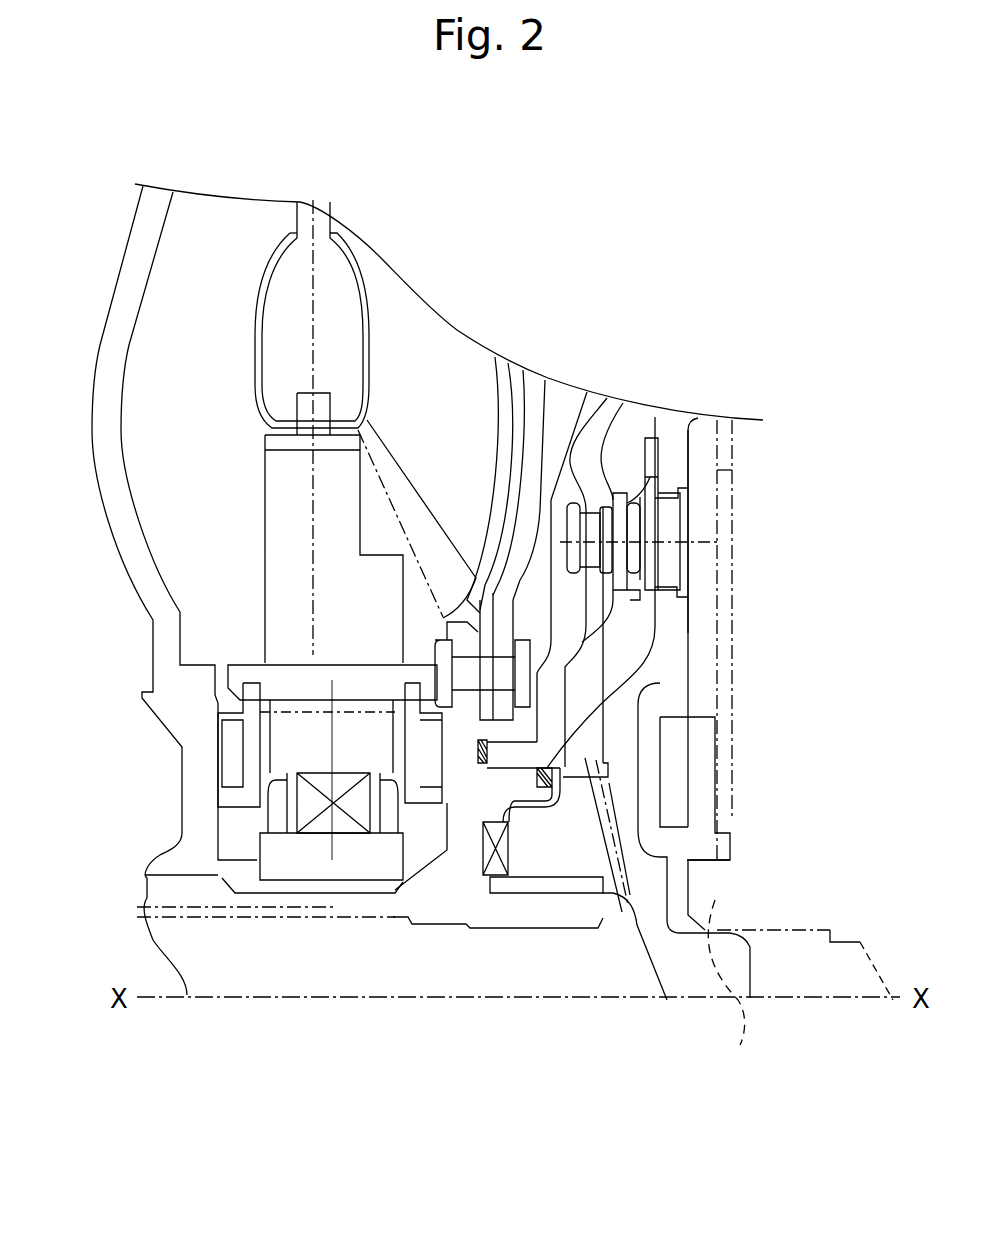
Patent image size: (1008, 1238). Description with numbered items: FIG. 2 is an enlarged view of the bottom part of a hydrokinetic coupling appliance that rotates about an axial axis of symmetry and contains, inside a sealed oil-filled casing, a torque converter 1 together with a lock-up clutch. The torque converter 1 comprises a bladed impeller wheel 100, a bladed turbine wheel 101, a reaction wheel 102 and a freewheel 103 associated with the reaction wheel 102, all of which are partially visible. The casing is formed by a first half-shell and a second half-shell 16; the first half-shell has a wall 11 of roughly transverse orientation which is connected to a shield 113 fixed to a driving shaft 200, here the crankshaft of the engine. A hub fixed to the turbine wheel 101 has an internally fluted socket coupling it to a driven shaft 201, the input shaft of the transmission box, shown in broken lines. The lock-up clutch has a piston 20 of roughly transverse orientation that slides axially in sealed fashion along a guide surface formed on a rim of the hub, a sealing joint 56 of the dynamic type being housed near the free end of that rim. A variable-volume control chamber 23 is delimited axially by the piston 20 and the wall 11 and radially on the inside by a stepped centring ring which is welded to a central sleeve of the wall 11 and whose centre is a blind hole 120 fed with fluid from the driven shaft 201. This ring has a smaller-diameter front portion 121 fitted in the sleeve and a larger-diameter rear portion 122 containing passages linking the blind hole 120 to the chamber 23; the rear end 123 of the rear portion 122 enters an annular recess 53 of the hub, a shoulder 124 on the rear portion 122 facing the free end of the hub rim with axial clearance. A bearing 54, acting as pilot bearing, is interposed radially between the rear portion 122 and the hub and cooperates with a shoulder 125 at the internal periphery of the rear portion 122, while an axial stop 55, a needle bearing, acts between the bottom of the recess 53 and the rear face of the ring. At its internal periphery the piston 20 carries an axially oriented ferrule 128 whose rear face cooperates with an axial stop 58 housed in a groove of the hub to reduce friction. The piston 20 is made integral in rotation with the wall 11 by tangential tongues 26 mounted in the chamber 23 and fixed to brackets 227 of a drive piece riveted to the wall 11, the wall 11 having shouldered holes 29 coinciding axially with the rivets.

The torque converter 1 is at (259, 192).
The wall 11 is at (677, 421).
The second half-shell 16 is at (130, 232).
The piston 20 is at (608, 398).
The variable-volume control chamber 23 is at (607, 647).
The tangential tongues 26 is at (617, 493).
The holes 29 is at (680, 520).
The annular recess 53 is at (510, 883).
The bearing 54 is at (537, 883).
The axial stop 55 is at (500, 875).
The sealing joint 56 is at (660, 683).
The axial stop 58 is at (478, 742).
The impeller wheel 100 is at (198, 213).
The turbine wheel 101 is at (386, 276).
The reaction wheel 102 is at (350, 490).
The freewheel 103 is at (320, 822).
The shield 113 is at (733, 445).
The blind hole 120 is at (640, 953).
The front portion 121 is at (655, 883).
The rear portion 122 is at (603, 790).
The rear end 123 is at (553, 867).
The shoulder 124 is at (563, 775).
The shoulder 125 is at (587, 870).
The ferrule 128 is at (510, 760).
The driving shaft 200 is at (737, 984).
The driven shaft 201 is at (363, 970).
The brackets 227 is at (653, 585).